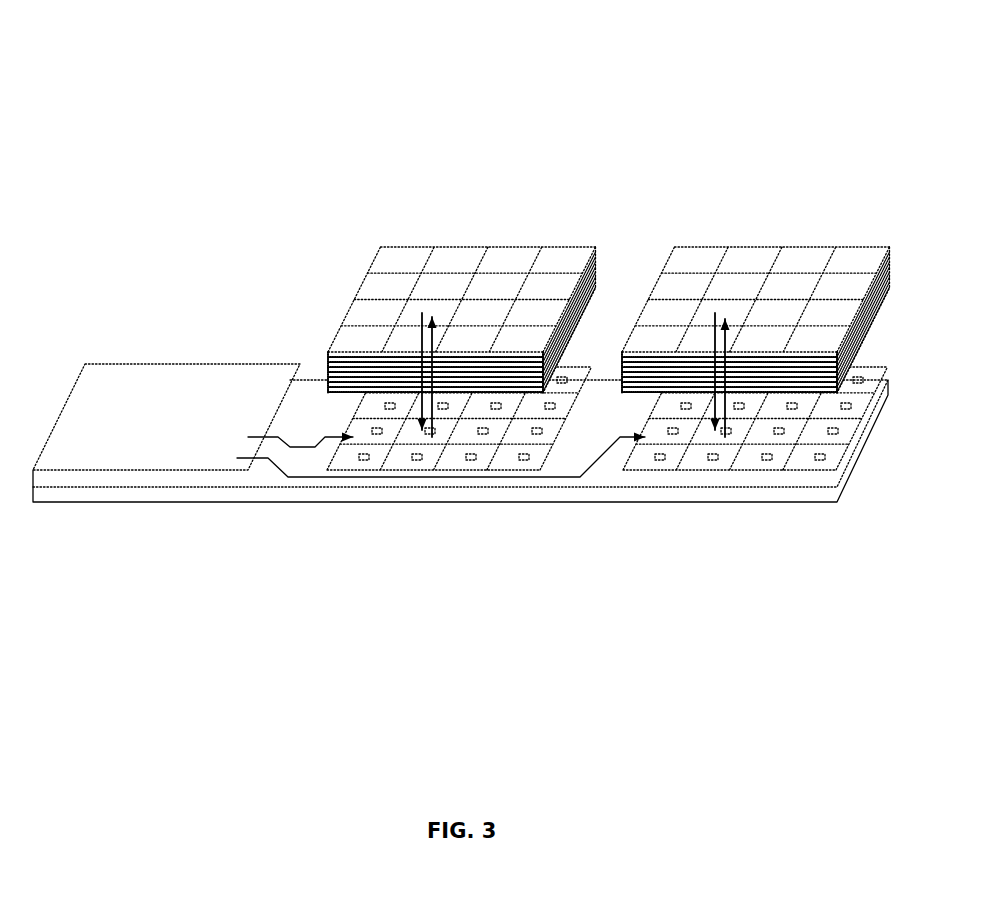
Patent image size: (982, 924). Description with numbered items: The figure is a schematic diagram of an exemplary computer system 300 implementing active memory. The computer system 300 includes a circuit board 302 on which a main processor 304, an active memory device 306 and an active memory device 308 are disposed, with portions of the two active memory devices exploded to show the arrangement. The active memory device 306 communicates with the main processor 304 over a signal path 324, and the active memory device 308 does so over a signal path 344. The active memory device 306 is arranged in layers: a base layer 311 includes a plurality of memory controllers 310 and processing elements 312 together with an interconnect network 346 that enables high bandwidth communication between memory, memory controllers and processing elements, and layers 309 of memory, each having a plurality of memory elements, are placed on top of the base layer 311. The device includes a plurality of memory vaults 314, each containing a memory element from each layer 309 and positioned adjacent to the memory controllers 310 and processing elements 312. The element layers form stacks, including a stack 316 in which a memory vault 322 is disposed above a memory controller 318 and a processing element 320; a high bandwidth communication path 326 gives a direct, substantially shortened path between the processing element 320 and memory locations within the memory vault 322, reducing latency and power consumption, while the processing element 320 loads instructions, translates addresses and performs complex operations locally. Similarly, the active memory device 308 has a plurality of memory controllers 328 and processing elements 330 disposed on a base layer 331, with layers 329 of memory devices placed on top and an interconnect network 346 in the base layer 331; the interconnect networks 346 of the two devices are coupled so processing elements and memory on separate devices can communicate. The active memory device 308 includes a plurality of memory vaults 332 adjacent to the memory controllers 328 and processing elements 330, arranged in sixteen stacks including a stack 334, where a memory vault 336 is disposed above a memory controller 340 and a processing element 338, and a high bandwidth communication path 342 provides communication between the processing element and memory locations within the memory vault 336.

The computer system 300 is at (355, 105).
The circuit board 302 is at (190, 497).
The main processor 304 is at (166, 417).
The active memory device 306 is at (510, 242).
The active memory device 308 is at (742, 247).
The layers 309 is at (327, 352).
The memory controllers 310 is at (468, 462).
The base layer 311 is at (447, 472).
The processing elements 312 is at (537, 457).
The memory vaults 314 is at (567, 283).
The stack 316 is at (398, 315).
The memory controller 318 is at (430, 437).
The processing element 320 is at (437, 440).
The memory vault 322 is at (412, 308).
The signal path 324 is at (320, 440).
The high bandwidth communication path 326 is at (418, 337).
The memory controllers 328 is at (753, 460).
The layers 329 is at (888, 245).
The processing elements 330 is at (825, 457).
The base layer 331 is at (733, 478).
The memory vaults 332 is at (860, 260).
The stack 334 is at (728, 308).
The memory vault 336 is at (712, 313).
The processing element 338 is at (727, 438).
The memory controller 340 is at (714, 438).
The high bandwidth communication path 342 is at (712, 330).
The signal path 344 is at (303, 478).
The interconnect network 346 is at (572, 408).